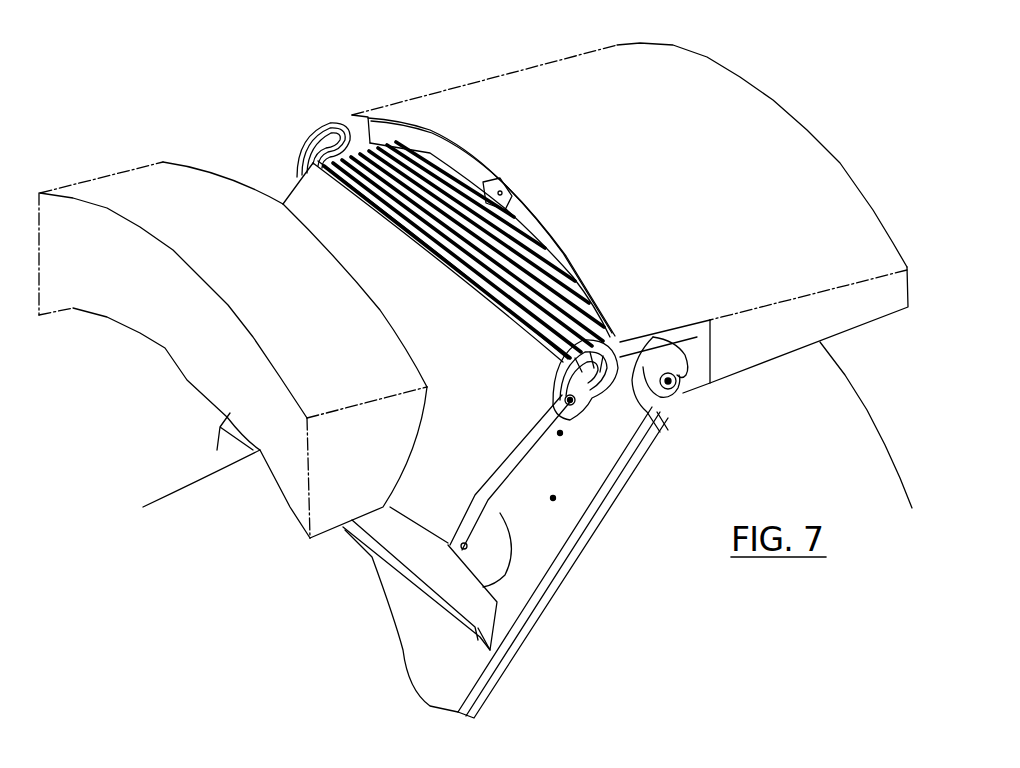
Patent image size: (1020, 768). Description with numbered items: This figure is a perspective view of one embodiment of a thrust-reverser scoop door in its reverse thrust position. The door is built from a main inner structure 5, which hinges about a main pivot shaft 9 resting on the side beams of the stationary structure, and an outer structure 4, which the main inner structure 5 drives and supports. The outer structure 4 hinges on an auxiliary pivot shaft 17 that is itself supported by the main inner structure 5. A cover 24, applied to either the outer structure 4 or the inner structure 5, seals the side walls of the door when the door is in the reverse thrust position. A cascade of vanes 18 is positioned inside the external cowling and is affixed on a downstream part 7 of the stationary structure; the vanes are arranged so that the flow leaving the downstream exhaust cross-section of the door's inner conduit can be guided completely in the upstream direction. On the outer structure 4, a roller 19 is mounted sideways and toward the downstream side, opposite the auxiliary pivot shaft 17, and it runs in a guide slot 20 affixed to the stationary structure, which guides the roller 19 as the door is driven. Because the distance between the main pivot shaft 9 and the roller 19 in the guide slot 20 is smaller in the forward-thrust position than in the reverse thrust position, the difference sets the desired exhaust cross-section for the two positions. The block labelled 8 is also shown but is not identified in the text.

The outer structure 4 is at (425, 405).
The main inner structure 5 is at (553, 501).
The downstream part 7 is at (632, 275).
The block segment 8 is at (248, 437).
The main pivot shaft 9 is at (677, 389).
The auxiliary pivot shaft 17 is at (466, 552).
The cascade of vanes 18 is at (395, 160).
The roller 19 is at (595, 428).
The guide slot 20 is at (331, 132).
The cover 24 is at (560, 436).